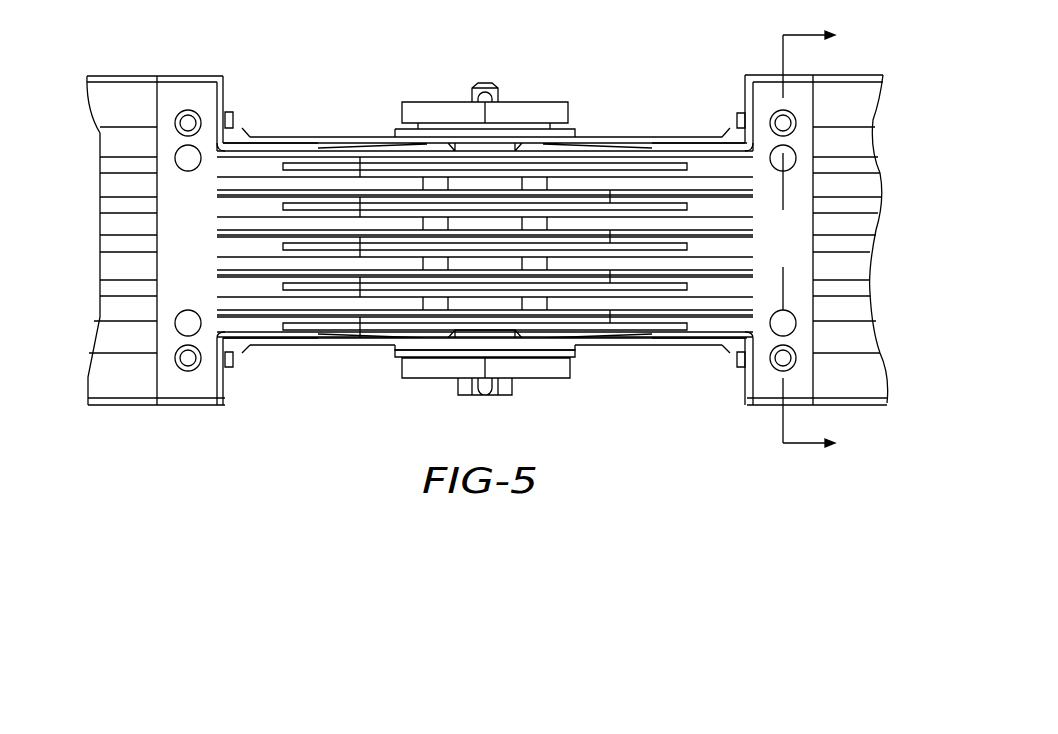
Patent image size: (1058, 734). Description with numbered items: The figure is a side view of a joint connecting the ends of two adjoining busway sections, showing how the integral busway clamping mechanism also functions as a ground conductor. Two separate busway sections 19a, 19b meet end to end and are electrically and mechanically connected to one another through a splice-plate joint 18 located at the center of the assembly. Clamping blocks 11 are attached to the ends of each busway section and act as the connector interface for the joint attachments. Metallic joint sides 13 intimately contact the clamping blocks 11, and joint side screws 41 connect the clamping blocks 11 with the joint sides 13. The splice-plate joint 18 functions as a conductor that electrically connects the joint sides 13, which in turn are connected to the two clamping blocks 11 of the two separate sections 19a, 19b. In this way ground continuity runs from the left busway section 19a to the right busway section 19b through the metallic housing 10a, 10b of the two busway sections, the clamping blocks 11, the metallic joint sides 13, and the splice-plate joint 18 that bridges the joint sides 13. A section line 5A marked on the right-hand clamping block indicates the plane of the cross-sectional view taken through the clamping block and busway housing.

The metallic housing 10a is at (107, 77).
The metallic housing 10b is at (865, 75).
The clamping block 11 is at (197, 88).
The joint side 13 is at (742, 92).
The splice-plate joint 18 is at (517, 108).
The busway section 19a is at (108, 108).
The busway section 19b is at (860, 105).
The joint side screw 41 is at (233, 118).
The section line 5A- 5A is at (830, 240).